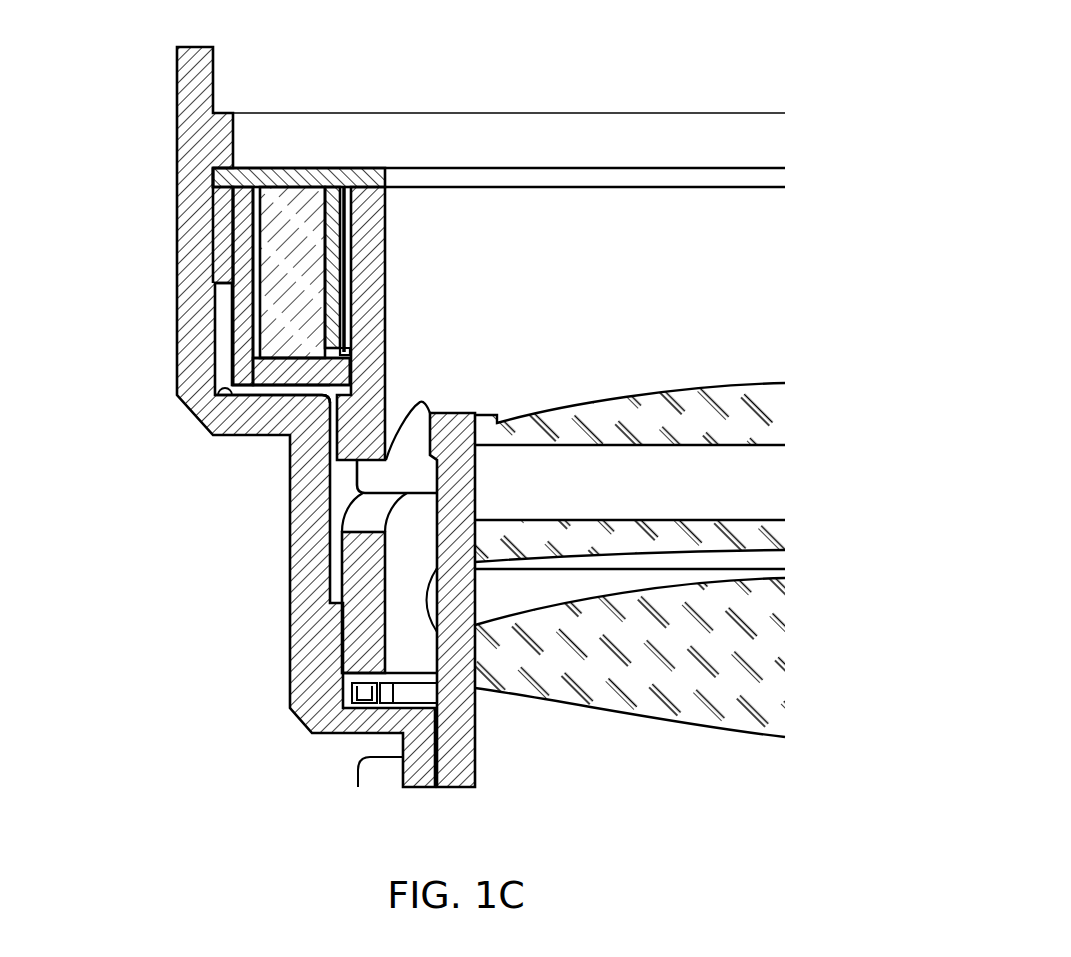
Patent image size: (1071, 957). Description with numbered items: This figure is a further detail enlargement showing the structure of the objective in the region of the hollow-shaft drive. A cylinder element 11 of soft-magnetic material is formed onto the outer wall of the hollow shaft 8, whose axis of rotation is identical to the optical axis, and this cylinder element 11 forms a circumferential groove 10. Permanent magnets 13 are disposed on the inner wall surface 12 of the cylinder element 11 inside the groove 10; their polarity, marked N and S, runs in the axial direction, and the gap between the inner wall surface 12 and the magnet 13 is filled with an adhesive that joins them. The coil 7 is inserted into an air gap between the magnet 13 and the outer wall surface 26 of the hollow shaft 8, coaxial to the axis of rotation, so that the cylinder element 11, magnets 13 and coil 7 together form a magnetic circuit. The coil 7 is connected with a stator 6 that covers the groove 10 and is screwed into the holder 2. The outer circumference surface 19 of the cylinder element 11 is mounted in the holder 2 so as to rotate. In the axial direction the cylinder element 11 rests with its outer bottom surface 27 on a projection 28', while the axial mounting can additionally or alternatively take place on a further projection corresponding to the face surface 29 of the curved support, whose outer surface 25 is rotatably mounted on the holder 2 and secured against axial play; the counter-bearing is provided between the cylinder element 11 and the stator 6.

The holder 2 is at (195, 92).
The stator 6 is at (350, 180).
The coil 7 is at (350, 236).
The hollow shaft 8 is at (362, 285).
The circumferential groove 10 is at (287, 135).
The cylinder element 11 is at (268, 373).
The inner wall surface 12 is at (258, 262).
The permanent magnets 13 is at (297, 232).
The outer circumference surface 19 is at (232, 326).
The outer surface 25 is at (342, 572).
The outer wall surface 26 is at (347, 354).
The outer bottom surface 27 is at (278, 393).
The projection 28' is at (167, 433).
The face surface 29 is at (377, 710).